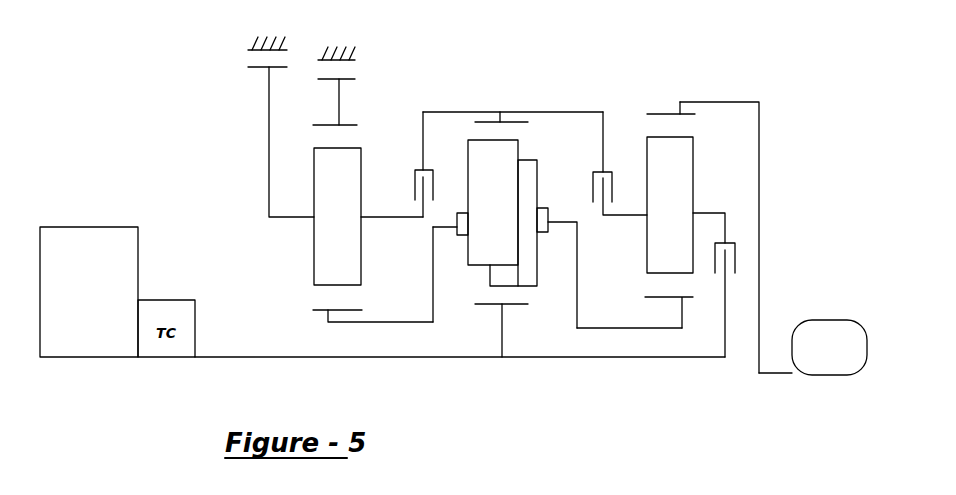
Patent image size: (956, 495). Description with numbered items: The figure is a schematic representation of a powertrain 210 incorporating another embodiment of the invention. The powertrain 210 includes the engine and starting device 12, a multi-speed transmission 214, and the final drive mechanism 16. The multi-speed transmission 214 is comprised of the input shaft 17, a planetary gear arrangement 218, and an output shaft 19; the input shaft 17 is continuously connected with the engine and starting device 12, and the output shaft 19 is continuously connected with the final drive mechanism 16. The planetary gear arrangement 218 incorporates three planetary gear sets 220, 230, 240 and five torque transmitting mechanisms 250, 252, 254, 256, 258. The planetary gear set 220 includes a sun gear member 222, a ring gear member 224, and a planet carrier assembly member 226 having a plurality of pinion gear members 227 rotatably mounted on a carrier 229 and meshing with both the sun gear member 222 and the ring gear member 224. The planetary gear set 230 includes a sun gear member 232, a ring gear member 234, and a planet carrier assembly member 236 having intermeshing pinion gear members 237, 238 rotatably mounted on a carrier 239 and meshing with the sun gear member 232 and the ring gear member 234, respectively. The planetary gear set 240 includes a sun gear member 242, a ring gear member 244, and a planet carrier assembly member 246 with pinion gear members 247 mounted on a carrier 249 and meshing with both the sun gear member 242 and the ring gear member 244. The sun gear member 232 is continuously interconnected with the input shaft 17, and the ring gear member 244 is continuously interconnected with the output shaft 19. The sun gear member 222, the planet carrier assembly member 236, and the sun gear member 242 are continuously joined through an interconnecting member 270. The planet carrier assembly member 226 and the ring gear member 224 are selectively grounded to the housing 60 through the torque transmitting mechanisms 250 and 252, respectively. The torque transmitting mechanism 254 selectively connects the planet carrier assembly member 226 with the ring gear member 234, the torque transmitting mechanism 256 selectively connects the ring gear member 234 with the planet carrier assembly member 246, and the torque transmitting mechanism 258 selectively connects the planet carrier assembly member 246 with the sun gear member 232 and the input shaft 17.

The engine and starting device 12 is at (77, 220).
The final drive mechanism 16 is at (818, 312).
The input shaft 17 is at (255, 357).
The output shaft 19 is at (763, 375).
The housing 60 is at (256, 37).
The powertrain 210 is at (158, 157).
The multi-speed transmission 214 is at (545, 62).
The planetary gear arrangement 218 is at (502, 378).
The planetary gear set 220 is at (391, 325).
The sun gear member 222 is at (313, 309).
The ring gear member 224 is at (357, 125).
The planet carrier assembly member 226 is at (290, 240).
The pinion gear members 227 is at (313, 228).
The carrier 229 is at (286, 215).
The planetary gear set 230 is at (548, 305).
The sun gear member 232 is at (488, 304).
The ring gear member 234 is at (480, 122).
The planet carrier assembly member 236 is at (532, 148).
The pinion gear members 237 is at (540, 265).
The pinion gear members 238 is at (467, 150).
The carrier 239 is at (558, 222).
The planetary gear set 240 is at (673, 345).
The sun gear member 242 is at (694, 300).
The ring gear member 244 is at (660, 114).
The planet carrier assembly member 246 is at (707, 150).
The pinion gear members 247 is at (693, 185).
The carrier 249 is at (716, 213).
The torque transmitting mechanism 250 is at (241, 53).
The torque transmitting mechanism 252 is at (315, 62).
The torque transmitting mechanism 254 is at (427, 224).
The torque transmitting mechanism 256 is at (615, 191).
The torque transmitting mechanism 258 is at (746, 241).
The interconnecting member 270 is at (407, 325).